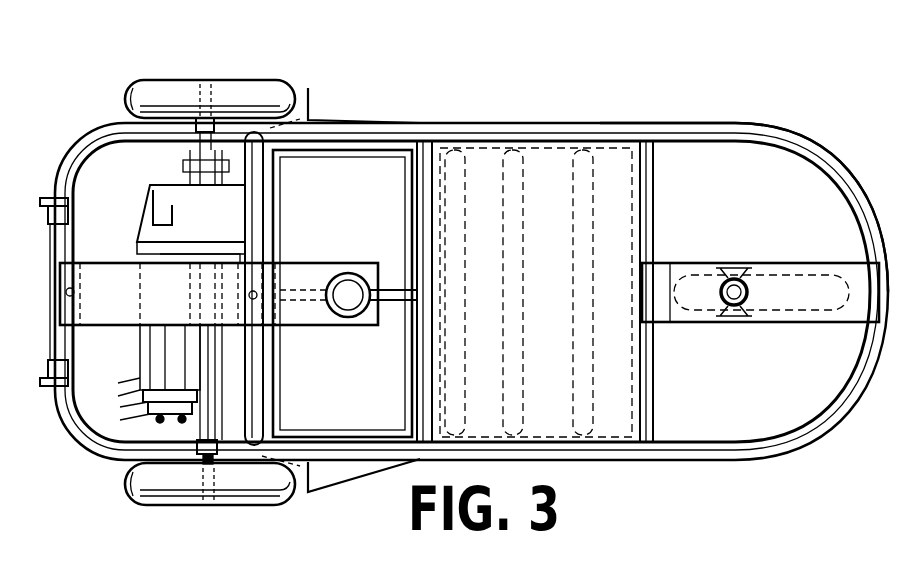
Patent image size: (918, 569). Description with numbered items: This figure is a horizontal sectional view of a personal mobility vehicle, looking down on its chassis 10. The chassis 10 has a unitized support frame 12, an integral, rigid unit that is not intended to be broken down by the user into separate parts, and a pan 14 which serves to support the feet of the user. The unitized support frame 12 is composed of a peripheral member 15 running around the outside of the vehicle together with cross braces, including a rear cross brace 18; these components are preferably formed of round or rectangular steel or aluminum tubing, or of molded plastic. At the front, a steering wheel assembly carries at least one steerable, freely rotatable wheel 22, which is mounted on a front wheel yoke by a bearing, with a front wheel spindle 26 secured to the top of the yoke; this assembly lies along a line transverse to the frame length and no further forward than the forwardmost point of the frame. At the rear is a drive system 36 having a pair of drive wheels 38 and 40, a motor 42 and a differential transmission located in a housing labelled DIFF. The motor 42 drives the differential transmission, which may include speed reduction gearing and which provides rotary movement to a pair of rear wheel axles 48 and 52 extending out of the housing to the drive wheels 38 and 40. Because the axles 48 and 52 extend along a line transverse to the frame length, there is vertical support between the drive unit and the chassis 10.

The chassis 10 is at (593, 78).
The unitized support frame 12 is at (676, 459).
The pan 14 is at (548, 148).
The peripheral member 15 is at (742, 123).
The rear cross brace 18 is at (293, 503).
The steerable, freely rotatable wheel 22 is at (812, 322).
The front wheel spindle 26 is at (727, 270).
The drive system 36 is at (136, 241).
The drive wheel 38 is at (189, 505).
The drive wheel 40 is at (274, 92).
The motor 42 is at (142, 356).
The rear wheel axle 48 is at (211, 508).
The rear wheel axle 52 is at (205, 78).